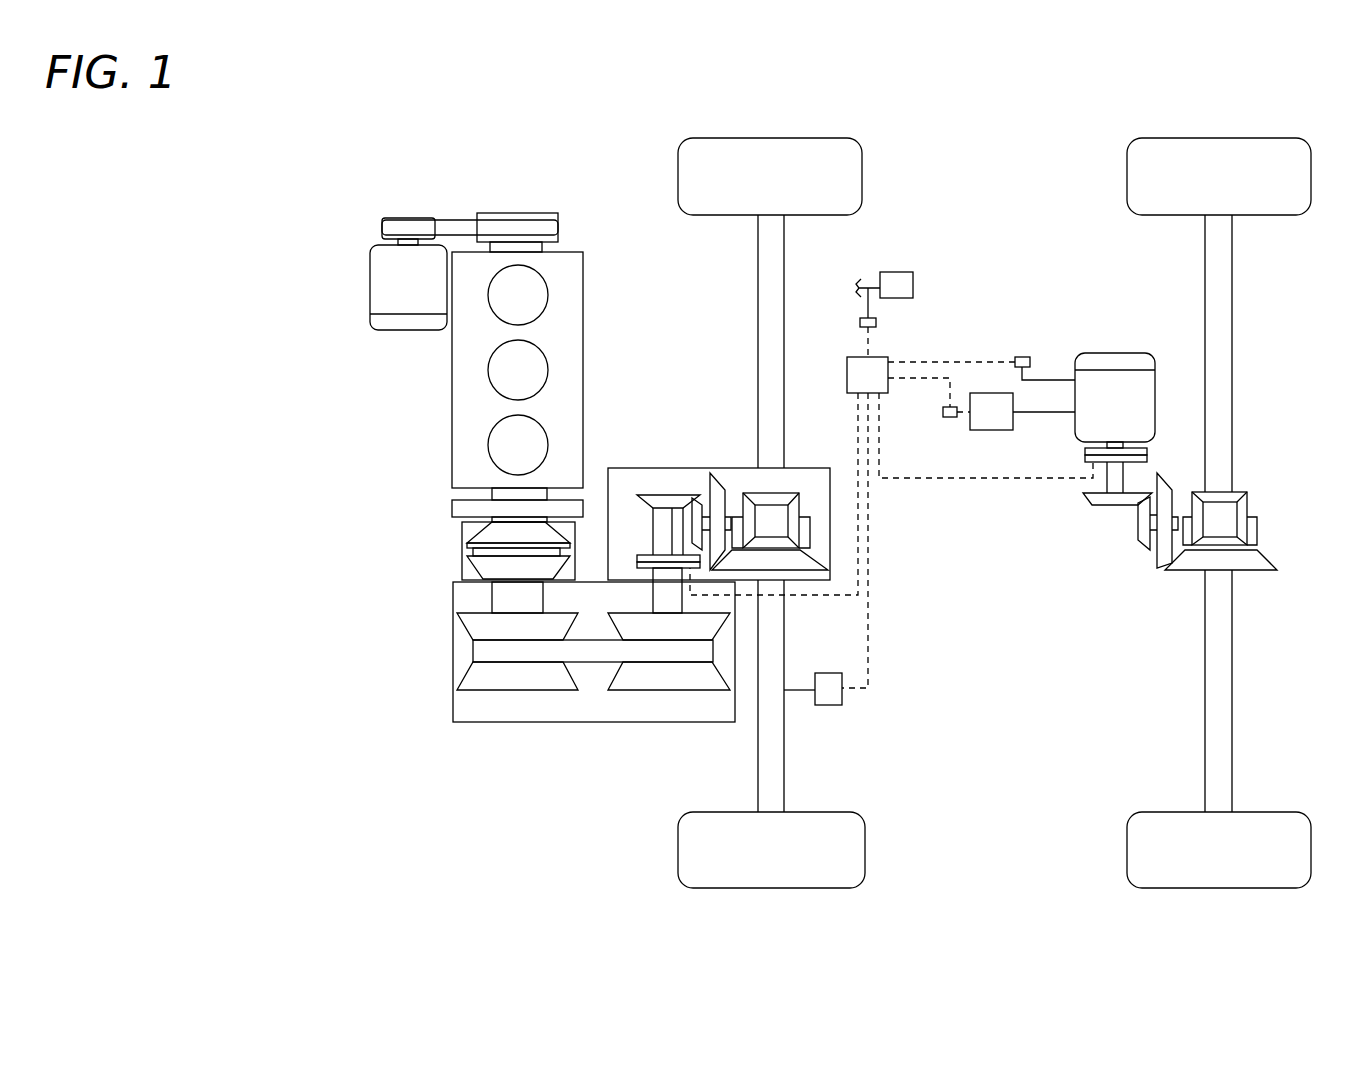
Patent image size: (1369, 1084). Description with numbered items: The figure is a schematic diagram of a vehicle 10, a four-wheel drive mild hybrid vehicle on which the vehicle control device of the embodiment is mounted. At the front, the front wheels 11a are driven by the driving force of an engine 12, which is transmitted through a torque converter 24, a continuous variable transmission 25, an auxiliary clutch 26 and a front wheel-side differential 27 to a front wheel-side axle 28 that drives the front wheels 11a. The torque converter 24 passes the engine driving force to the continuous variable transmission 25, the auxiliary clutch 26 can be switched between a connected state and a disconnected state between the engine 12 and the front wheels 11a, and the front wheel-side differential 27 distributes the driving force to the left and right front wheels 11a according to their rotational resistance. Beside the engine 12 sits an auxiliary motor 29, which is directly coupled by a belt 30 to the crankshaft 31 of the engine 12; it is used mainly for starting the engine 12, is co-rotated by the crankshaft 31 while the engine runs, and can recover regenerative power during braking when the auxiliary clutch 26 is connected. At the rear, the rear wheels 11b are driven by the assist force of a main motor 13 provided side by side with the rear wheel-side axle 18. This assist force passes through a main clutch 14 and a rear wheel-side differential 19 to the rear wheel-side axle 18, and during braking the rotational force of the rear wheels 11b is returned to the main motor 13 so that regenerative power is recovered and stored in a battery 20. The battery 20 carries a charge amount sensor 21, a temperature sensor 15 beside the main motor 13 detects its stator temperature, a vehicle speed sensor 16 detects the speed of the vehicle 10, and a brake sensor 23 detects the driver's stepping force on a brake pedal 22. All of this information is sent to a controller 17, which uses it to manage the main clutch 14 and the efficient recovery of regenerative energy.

The vehicle 10 is at (930, 101).
The front wheels 11a is at (773, 157).
The rear wheels 11b is at (1222, 157).
The engine 12 is at (462, 372).
The main motor 13 is at (1117, 380).
The main clutch 14 is at (1148, 455).
The temperature sensor 15 is at (1022, 357).
The vehicle speed sensor 16 is at (826, 705).
The controller 17 is at (855, 380).
The rear wheel-side axle 18 is at (1232, 302).
The rear wheel-side differential 19 is at (1250, 508).
The battery 20 is at (995, 430).
The charge amount sensor 21 is at (950, 418).
The brake pedal 22 is at (913, 284).
The brake sensor 23 is at (876, 322).
The torque converter 24 is at (483, 537).
The continuous variable transmission 25 is at (517, 680).
The auxiliary clutch 26 is at (637, 555).
The front wheel-side differential 27 is at (750, 492).
The front wheel-side axle 28 is at (762, 276).
The auxiliary motor 29 is at (390, 275).
The belt 30 is at (458, 222).
The crankshaft 31 is at (520, 215).